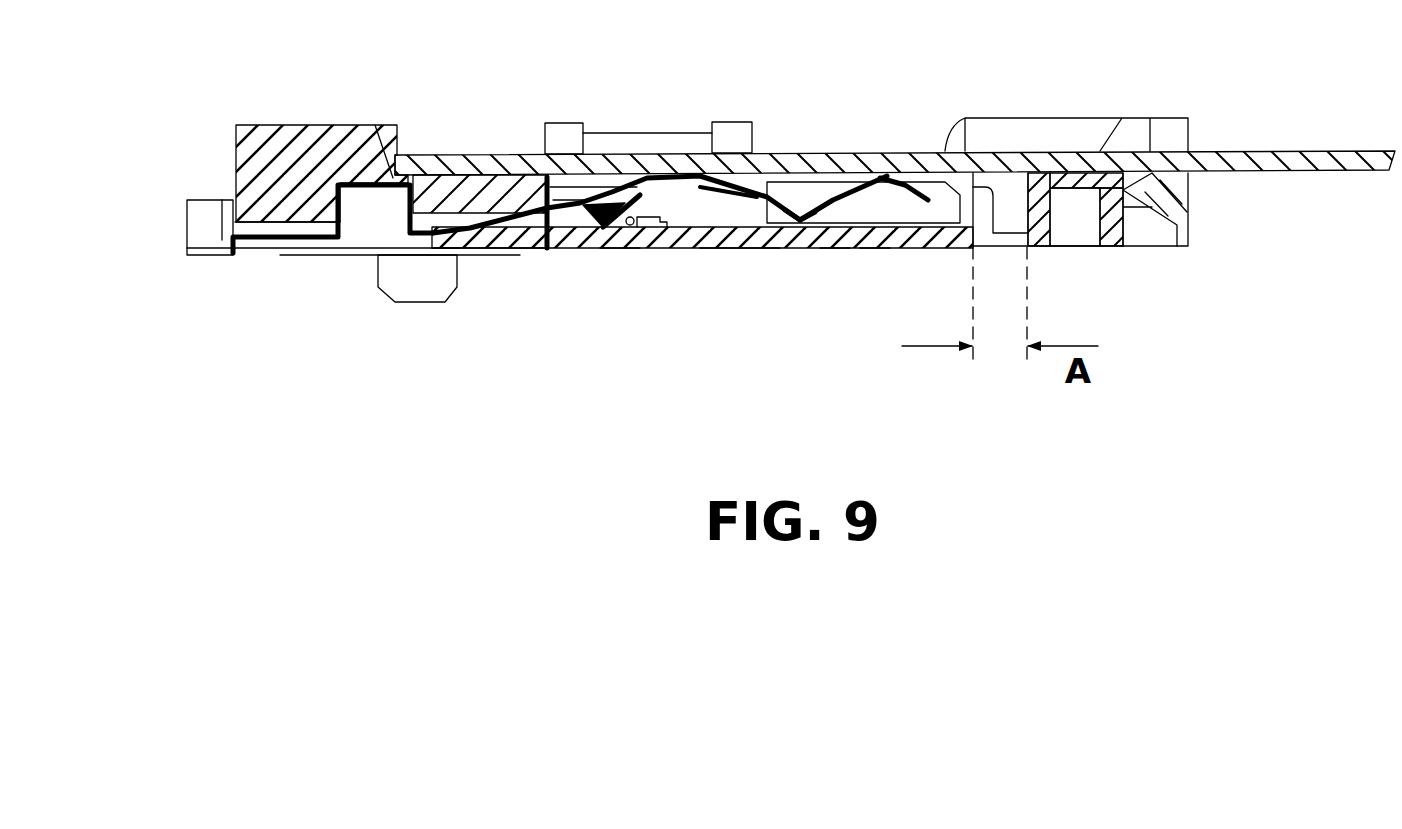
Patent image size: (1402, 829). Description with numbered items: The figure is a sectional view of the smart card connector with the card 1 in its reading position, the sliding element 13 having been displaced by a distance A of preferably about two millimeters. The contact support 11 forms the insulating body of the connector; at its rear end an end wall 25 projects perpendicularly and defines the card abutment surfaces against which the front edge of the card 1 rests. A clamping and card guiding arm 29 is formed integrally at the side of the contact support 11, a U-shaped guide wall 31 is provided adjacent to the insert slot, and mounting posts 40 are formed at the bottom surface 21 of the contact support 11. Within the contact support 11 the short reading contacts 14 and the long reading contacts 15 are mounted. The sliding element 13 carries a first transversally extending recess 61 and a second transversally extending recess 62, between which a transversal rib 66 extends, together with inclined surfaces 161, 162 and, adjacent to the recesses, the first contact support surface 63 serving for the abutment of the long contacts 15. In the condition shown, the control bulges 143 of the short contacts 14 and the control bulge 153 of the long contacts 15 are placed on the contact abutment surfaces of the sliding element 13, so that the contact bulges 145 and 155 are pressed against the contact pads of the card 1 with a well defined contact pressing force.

The card 1 is at (1308, 150).
The contact support 11 is at (212, 159).
The sliding element 13 is at (875, 246).
The short reading contacts 14 is at (650, 174).
The long reading contacts 15 is at (832, 180).
The bottom surface 21 is at (1112, 248).
The end wall 25 is at (318, 125).
The clamping and card guiding arm 29 is at (553, 140).
The guide wall 31 is at (968, 110).
The mounting posts 40 is at (408, 278).
The first transversally extending recess 61 is at (540, 173).
The second transversally extending recess 62 is at (750, 222).
The first contact support surface 63 is at (615, 249).
The transversal rib 66 is at (650, 220).
The control bulges 143 is at (603, 227).
The contact bulges 145 is at (690, 152).
The control bulge 153 is at (800, 226).
The contact bulge 155 is at (890, 178).
The inclined surface 161 is at (545, 258).
The inclined surface 162 is at (742, 249).